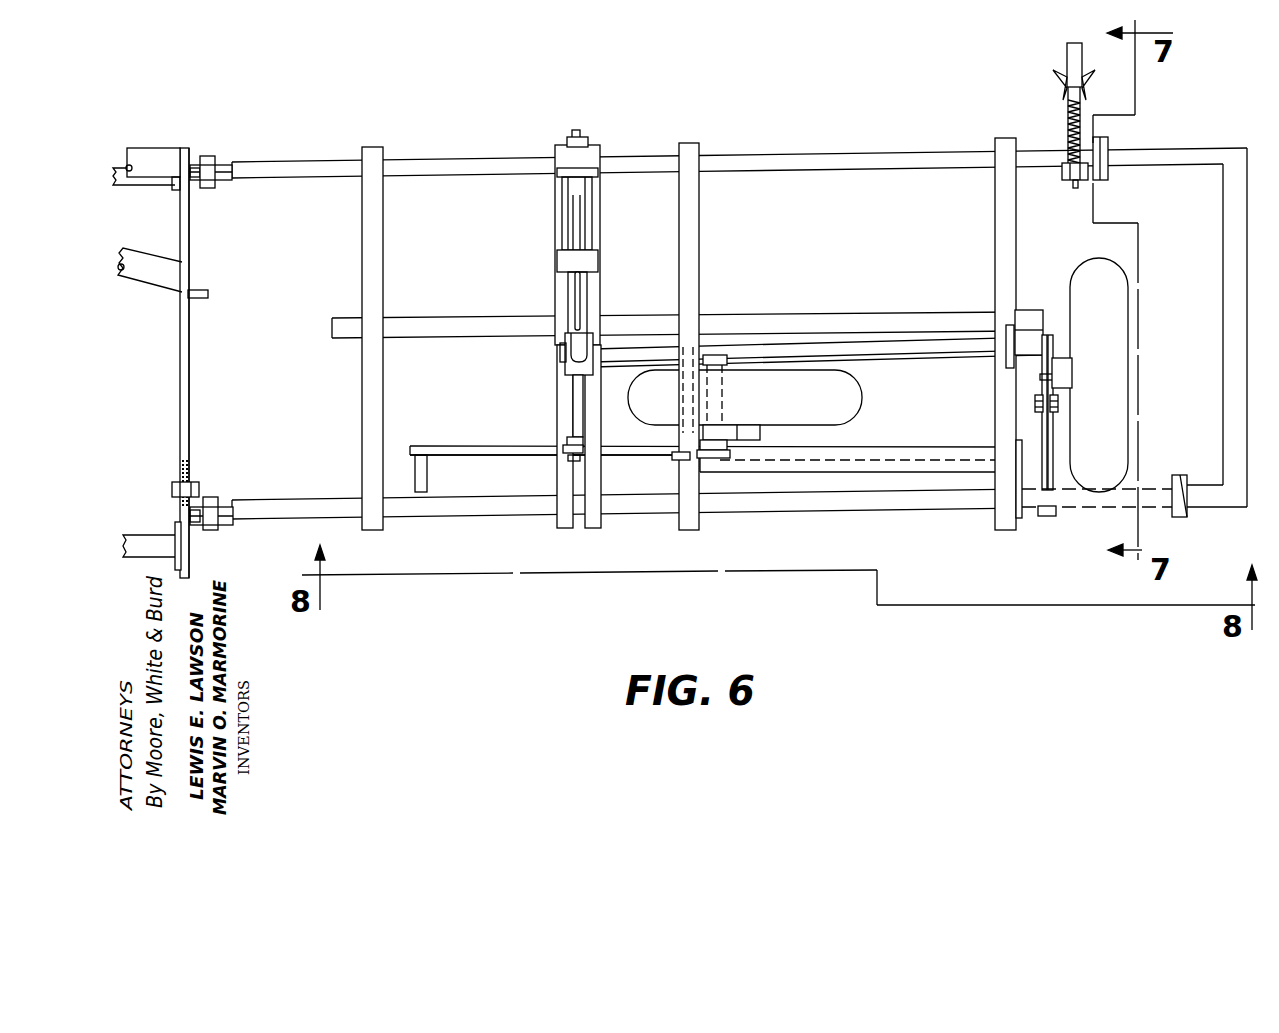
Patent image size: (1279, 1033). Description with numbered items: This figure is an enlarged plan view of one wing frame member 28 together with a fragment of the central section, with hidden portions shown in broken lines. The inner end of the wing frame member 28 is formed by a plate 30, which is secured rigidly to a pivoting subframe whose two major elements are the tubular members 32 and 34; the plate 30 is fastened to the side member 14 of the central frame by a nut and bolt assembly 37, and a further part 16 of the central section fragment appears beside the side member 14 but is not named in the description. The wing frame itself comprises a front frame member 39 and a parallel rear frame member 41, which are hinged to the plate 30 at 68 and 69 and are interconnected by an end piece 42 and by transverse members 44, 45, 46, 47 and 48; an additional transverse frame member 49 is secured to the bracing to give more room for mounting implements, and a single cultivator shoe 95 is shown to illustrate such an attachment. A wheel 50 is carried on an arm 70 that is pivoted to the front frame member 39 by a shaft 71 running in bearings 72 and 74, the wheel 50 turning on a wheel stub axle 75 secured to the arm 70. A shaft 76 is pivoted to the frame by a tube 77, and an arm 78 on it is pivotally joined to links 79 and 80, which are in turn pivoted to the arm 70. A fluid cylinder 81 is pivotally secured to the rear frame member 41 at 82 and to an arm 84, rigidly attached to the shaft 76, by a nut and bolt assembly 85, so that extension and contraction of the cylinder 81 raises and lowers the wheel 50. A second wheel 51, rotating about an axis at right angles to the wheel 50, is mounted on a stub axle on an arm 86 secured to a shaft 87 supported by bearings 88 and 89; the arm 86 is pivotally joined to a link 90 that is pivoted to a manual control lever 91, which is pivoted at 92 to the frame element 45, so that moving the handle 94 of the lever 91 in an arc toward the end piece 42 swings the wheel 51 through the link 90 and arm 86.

The side member 14 is at (180, 360).
The support bar 16 is at (132, 183).
The wing frame member 28 is at (453, 156).
The plate 30 is at (190, 378).
The subframe member 32 is at (156, 150).
The subframe member 34 is at (142, 270).
The nut and bolt assembly 37 is at (208, 478).
The front frame member 39 is at (920, 505).
The rear frame member 41 is at (786, 158).
The end piece 42 is at (1247, 267).
The transverse member 44 is at (996, 215).
The transverse member 45 is at (700, 248).
The transverse member 46 is at (602, 222).
The transverse member 47 is at (556, 278).
The transverse member 48 is at (362, 250).
The additional transverse frame member 49 is at (834, 314).
The wheel 50 is at (1092, 262).
The wheel 51 is at (862, 400).
The hinge 68 is at (218, 540).
The hinge 69 is at (220, 150).
The arm 70 is at (1052, 442).
The shaft 71 is at (1080, 506).
The bearing 72 is at (1037, 492).
The bearing 74 is at (1165, 507).
The wheel stub axle 75 is at (1065, 367).
The shaft 76 is at (1037, 338).
The tube 77 is at (930, 343).
The arm 78 is at (1048, 348).
The link 79 is at (1060, 379).
The link 80 is at (1040, 377).
The fluid cylinder 81 is at (572, 212).
The pivot 82 is at (590, 128).
The arm 84 is at (576, 392).
The nut and bolt assembly 85 is at (556, 375).
The arm 86 is at (762, 436).
The shaft 87 is at (723, 392).
The bearing 88 is at (704, 370).
The bearing 89 is at (732, 458).
The link 90 is at (622, 445).
The manual control lever 91 is at (492, 452).
The pivot 92 is at (674, 464).
The handle 94 is at (428, 479).
The cultivator shoe 95 is at (1067, 46).